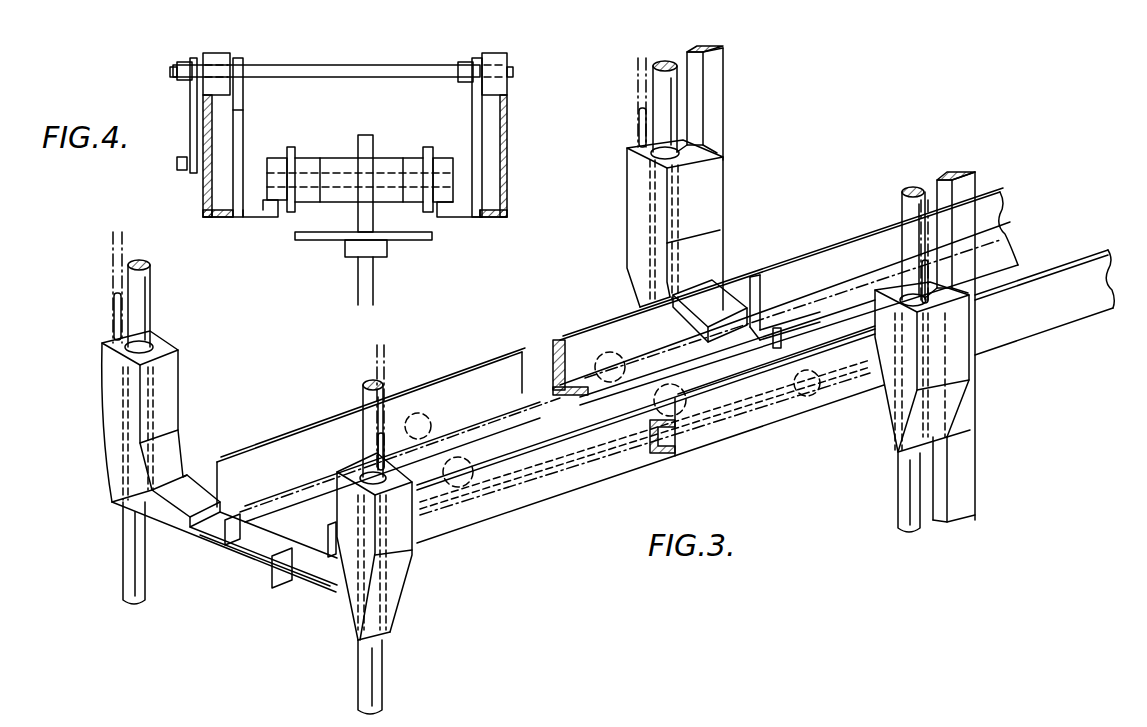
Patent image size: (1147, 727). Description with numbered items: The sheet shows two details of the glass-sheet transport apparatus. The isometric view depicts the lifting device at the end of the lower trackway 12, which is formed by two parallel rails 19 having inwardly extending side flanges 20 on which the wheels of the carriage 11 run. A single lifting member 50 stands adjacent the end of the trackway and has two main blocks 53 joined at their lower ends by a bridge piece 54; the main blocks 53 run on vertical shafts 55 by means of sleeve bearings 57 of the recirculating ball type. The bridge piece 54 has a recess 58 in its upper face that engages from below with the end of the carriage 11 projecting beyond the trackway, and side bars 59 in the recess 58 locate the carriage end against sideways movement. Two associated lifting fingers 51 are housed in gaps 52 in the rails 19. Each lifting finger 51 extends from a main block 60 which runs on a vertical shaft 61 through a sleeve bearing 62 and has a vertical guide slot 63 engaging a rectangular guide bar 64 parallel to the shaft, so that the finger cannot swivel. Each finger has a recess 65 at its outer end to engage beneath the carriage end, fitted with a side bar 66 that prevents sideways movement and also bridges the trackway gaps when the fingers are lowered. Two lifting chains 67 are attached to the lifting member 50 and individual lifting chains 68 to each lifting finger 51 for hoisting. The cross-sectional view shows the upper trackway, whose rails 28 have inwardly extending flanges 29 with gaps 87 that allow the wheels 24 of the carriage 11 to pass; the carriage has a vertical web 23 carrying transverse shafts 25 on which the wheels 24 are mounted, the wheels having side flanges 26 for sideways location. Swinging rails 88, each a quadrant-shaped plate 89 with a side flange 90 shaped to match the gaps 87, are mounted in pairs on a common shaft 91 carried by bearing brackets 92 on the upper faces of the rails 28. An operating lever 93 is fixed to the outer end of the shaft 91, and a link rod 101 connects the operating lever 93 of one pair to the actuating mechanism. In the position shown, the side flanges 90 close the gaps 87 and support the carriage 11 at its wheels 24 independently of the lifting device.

In FIG. 4, the carriage 11 is at (400, 238).
In FIG. 3, the carriage 11 is at (457, 510).
In FIG. 3, the lower trackway 12 is at (1068, 306).
In FIG. 3, the rails 19 is at (470, 385).
In FIG. 3, the side flanges 20 is at (578, 398).
In FIG. 4, the vertical web 23 is at (365, 135).
In FIG. 4, the wheels 24 is at (303, 162).
In FIG. 4, the transverse shafts 25 is at (386, 182).
In FIG. 4, the side flanges 26 is at (288, 152).
In FIG. 4, the rails 28 is at (205, 183).
In FIG. 4, the inwardly extending flanges 29 is at (212, 219).
In FIG. 3, the lifting member 50 is at (260, 473).
In FIG. 3, the lifting fingers 51 is at (823, 292).
In FIG. 3, the gaps 52 is at (735, 295).
In FIG. 3, the main blocks 53 is at (172, 370).
In FIG. 3, the bridge piece 54 is at (235, 567).
In FIG. 3, the vertical shafts 55 is at (140, 300).
In FIG. 3, the sleeve bearings 57 is at (153, 416).
In FIG. 3, the recess 58 is at (215, 543).
In FIG. 3, the side bars 59 is at (230, 522).
In FIG. 3, the main block 60 is at (710, 182).
In FIG. 3, the vertical shaft 61 is at (657, 102).
In FIG. 3, the sleeve bearing 62 is at (640, 206).
In FIG. 3, the vertical guide slot 63 is at (730, 143).
In FIG. 3, the guide bar 64 is at (720, 92).
In FIG. 3, the recess 65 is at (770, 330).
In FIG. 3, the side bar 66 is at (690, 345).
In FIG. 3, the lifting chains 67 is at (115, 326).
In FIG. 3, the lifting chains 68 is at (643, 126).
In FIG. 4, the gaps 87 is at (237, 219).
In FIG. 4, the swinging rails 88 is at (246, 110).
In FIG. 4, the quadrant-shaped plate 89 is at (243, 140).
In FIG. 4, the side flange 90 is at (266, 219).
In FIG. 4, the common shaft 91 is at (373, 76).
In FIG. 4, the bearing brackets 92 is at (222, 54).
In FIG. 4, the operating lever 93 is at (190, 112).
In FIG. 4, the link rod 101 is at (177, 164).